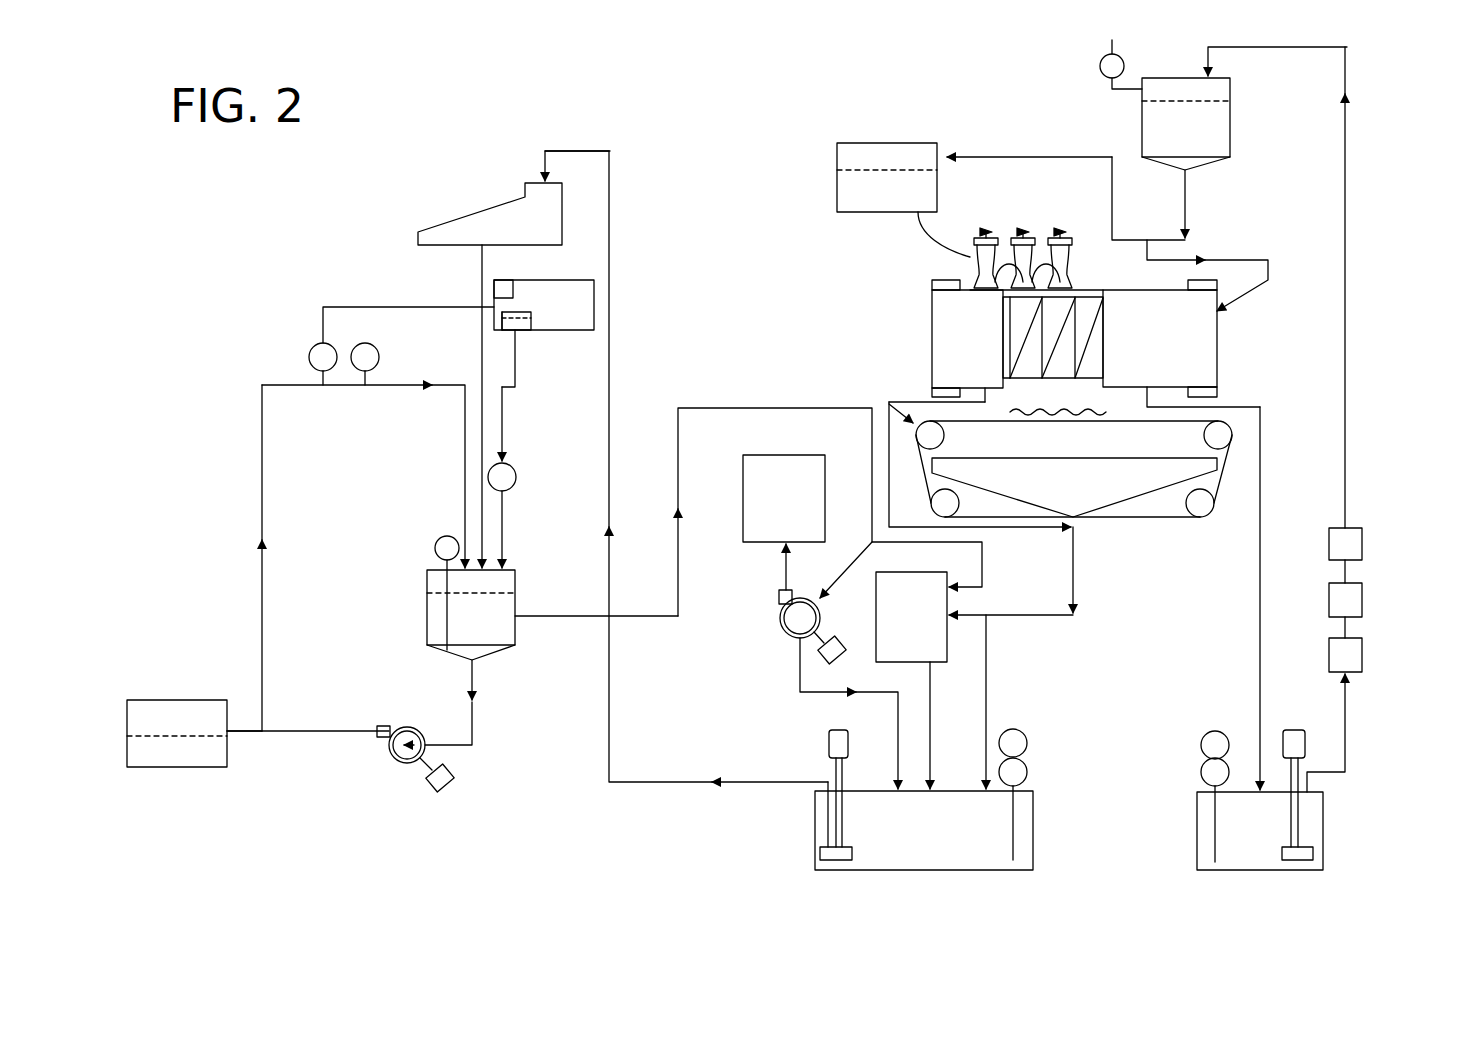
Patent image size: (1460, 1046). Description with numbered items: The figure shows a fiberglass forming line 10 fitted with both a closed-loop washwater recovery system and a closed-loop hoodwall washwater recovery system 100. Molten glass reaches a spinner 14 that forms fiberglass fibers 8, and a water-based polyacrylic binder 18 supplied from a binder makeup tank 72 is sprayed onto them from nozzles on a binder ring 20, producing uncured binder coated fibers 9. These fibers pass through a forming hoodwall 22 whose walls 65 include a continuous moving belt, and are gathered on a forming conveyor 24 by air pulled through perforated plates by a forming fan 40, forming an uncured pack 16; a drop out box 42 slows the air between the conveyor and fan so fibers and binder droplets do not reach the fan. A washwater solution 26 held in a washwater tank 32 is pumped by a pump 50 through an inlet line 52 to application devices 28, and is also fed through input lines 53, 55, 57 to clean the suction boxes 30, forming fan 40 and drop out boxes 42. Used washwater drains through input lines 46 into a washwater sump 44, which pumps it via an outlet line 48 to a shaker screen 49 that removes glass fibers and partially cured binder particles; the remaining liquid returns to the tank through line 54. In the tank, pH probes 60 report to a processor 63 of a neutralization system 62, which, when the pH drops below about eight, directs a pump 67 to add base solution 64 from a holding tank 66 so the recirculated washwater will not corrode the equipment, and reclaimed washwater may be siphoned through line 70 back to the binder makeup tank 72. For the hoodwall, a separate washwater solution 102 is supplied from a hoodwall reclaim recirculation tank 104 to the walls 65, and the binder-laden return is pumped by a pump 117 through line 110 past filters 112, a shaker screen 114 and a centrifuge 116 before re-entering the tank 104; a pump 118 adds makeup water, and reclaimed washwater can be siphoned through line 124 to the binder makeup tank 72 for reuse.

The fiberglass fibers 8 is at (985, 227).
The uncured binder coated fiber 9 is at (977, 270).
The fiberglass forming line 10 is at (897, 297).
The spinner 14 is at (1072, 233).
The uncured pack 16 is at (1085, 412).
The water-based polyacrylic binder 18 is at (837, 190).
The binder ring 20 is at (1075, 262).
The forming hoodwall 22 is at (932, 340).
The forming conveyor 24 is at (1170, 422).
The washwater solution 26 is at (437, 614).
The application devices 28 is at (1121, 229).
The suction boxes 30 is at (1107, 483).
The washwater tank 32 is at (427, 580).
The forming fan 40 is at (780, 632).
The drop out box 42 is at (891, 623).
The washwater sump 44 is at (815, 830).
The input lines 46 is at (893, 732).
The outlet line 48 is at (655, 782).
The shaker screen 49 is at (482, 218).
The pump 50 is at (395, 760).
The inlet line 52 is at (560, 616).
The input line 53 is at (882, 403).
The line 54 is at (482, 347).
The input line 55 is at (858, 557).
The input line 57 is at (982, 565).
The pH probes 60 is at (309, 361).
The neutralization system 62 is at (572, 330).
The processor 63 is at (497, 289).
The base solution 64 is at (531, 322).
The walls 65 is at (1211, 348).
The holding tank 66 is at (522, 312).
The pump 67 is at (514, 470).
The line 70 is at (240, 735).
The binder makeup tank 72 is at (175, 700).
The closed-loop hoodwall washwater recovery system 100 is at (1363, 217).
The washwater solution 102 is at (1150, 119).
The hoodwall reclaim recirculation tank 104 is at (1232, 128).
The line 110 is at (1348, 130).
The filters 112 is at (1329, 658).
The shaker screen 114 is at (1362, 600).
The centrifuge 116 is at (1329, 548).
The pump 117 is at (1197, 828).
The pump 118 is at (1099, 61).
The line 124 is at (975, 157).